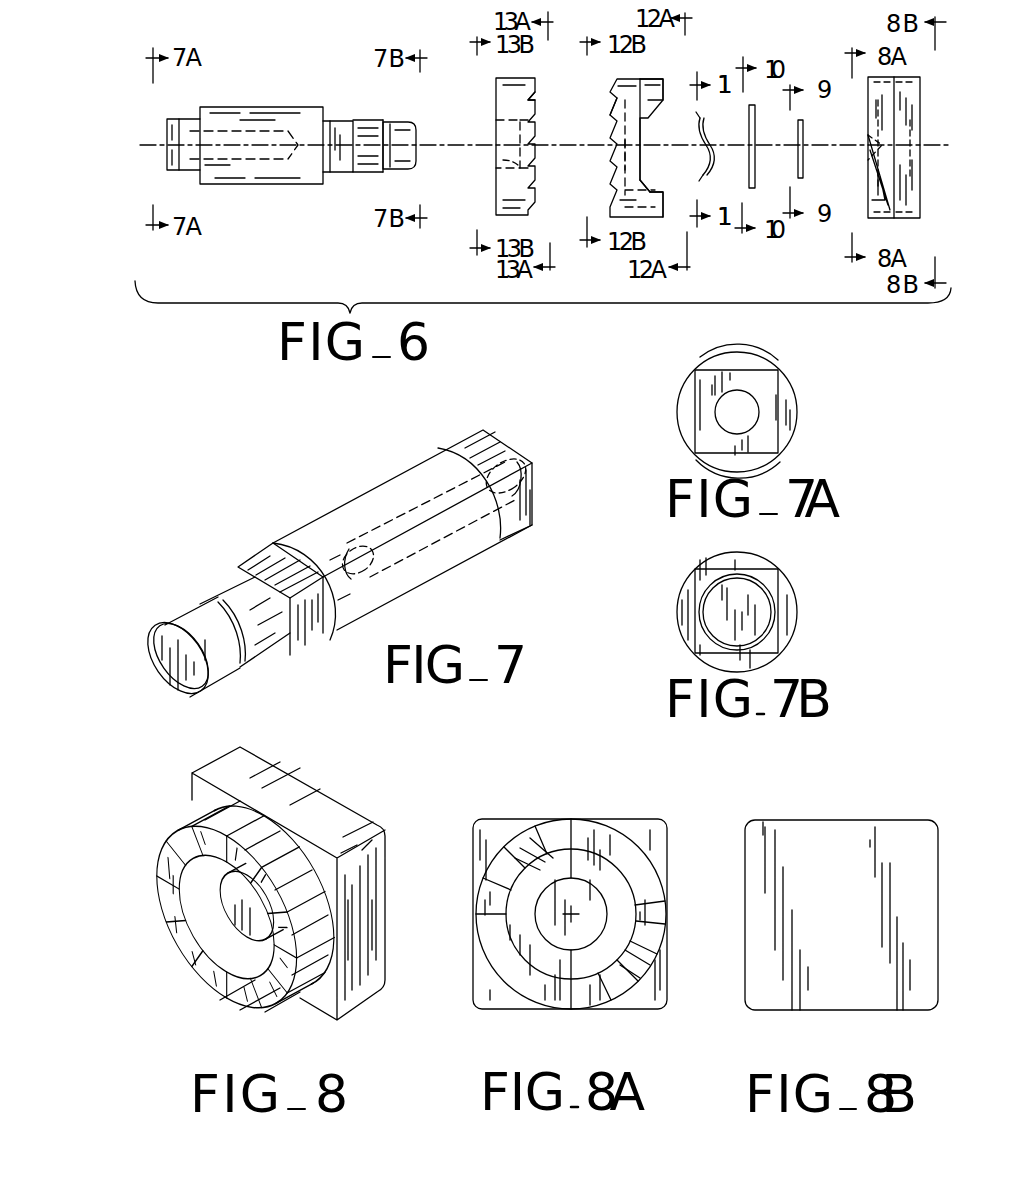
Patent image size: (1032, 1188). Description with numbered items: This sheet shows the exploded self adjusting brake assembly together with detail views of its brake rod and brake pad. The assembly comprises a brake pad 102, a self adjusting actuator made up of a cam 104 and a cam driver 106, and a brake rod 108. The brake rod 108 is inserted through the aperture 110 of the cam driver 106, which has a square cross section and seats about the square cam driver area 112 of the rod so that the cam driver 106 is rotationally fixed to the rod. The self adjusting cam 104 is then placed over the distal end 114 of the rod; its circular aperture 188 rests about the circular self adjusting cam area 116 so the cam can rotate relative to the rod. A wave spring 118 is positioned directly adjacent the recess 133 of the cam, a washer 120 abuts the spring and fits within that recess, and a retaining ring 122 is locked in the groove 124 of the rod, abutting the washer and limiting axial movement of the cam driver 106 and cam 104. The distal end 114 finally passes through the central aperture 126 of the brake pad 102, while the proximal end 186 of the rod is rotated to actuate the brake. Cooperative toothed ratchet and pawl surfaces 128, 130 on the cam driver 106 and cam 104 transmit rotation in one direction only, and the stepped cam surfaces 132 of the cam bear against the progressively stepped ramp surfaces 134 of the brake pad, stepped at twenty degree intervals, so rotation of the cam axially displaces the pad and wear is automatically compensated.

In FIG. 6, the brake pad 102 is at (912, 100).
In FIG. 8, the brake pad 102 is at (335, 823).
In FIG. 8A, the brake pad 102 is at (655, 822).
In FIG. 8B, the brake pad 102 is at (895, 830).
In FIG. 6, the self adjusting cam 104 is at (650, 92).
In FIG. 6, the cam driver 106 is at (512, 84).
In FIG. 6, the brake rod 108 is at (276, 118).
In FIG. 7, the brake rod 108 is at (353, 505).
In FIG. 7A, the brake rod 108 is at (782, 355).
In FIG. 7B, the brake rod 108 is at (795, 570).
In FIG. 6, the aperture 110 is at (500, 165).
In FIG. 6, the cam driver area 112 is at (332, 175).
In FIG. 7, the cam driver area 112 is at (312, 633).
In FIG. 7B, the cam driver area 112 is at (690, 640).
In FIG. 6, the distal end 114 is at (400, 116).
In FIG. 7, the distal end 114 is at (170, 614).
In FIG. 7B, the distal end 114 is at (765, 620).
In FIG. 7, the self adjusting cam area 116 is at (265, 648).
In FIG. 6, the wave spring 118 is at (714, 118).
In FIG. 6, the washer 120 is at (775, 134).
In FIG. 6, the retaining ring 122 is at (803, 141).
In FIG. 6, the groove 124 is at (388, 178).
In FIG. 7, the groove 124 is at (245, 658).
In FIG. 6, the central aperture 126 is at (876, 158).
In FIG. 8, the central aperture 126 is at (232, 918).
In FIG. 6, the toothed ratchet and pawl surface 128 is at (540, 116).
In FIG. 6, the toothed ratchet and pawl surface 130 is at (603, 109).
In FIG. 6, the stepped ramp or cam surfaces 132 is at (672, 96).
In FIG. 6, the recess 133 is at (642, 190).
In FIG. 6, the stepped ramp surfaces 134 is at (870, 206).
In FIG. 8, the stepped ramp surfaces 134 is at (168, 816).
In FIG. 8A, the stepped ramp surfaces 134 is at (505, 857).
In FIG. 6, the proximal end 186 is at (185, 116).
In FIG. 7, the proximal end 186 is at (468, 430).
In FIG. 7A, the proximal end 186 is at (798, 430).
In FIG. 6, the aperture 188 is at (612, 163).